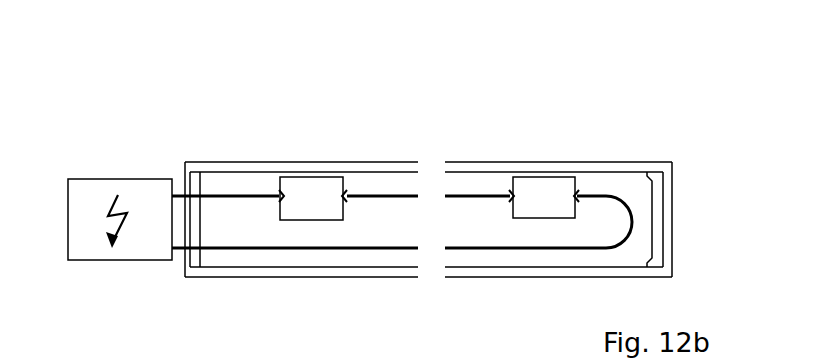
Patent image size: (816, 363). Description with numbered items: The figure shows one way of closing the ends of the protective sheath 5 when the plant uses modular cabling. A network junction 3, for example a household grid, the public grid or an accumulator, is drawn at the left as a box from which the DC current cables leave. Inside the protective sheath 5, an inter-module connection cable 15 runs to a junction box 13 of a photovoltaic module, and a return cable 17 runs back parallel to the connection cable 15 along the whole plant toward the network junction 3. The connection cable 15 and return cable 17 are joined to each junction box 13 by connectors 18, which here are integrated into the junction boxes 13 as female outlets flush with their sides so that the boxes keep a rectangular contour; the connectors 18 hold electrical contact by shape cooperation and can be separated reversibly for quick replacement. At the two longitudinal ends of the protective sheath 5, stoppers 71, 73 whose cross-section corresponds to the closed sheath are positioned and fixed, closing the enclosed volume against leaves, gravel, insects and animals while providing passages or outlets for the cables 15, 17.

The network junction 3 is at (105, 178).
The protective sheath 5 is at (380, 280).
The junction box 13 is at (539, 177).
The inter-module connection cable 15 is at (500, 194).
The return cable 17 is at (535, 252).
The connector 18 is at (578, 188).
The stopper 71 is at (187, 172).
The stopper 73 is at (665, 218).